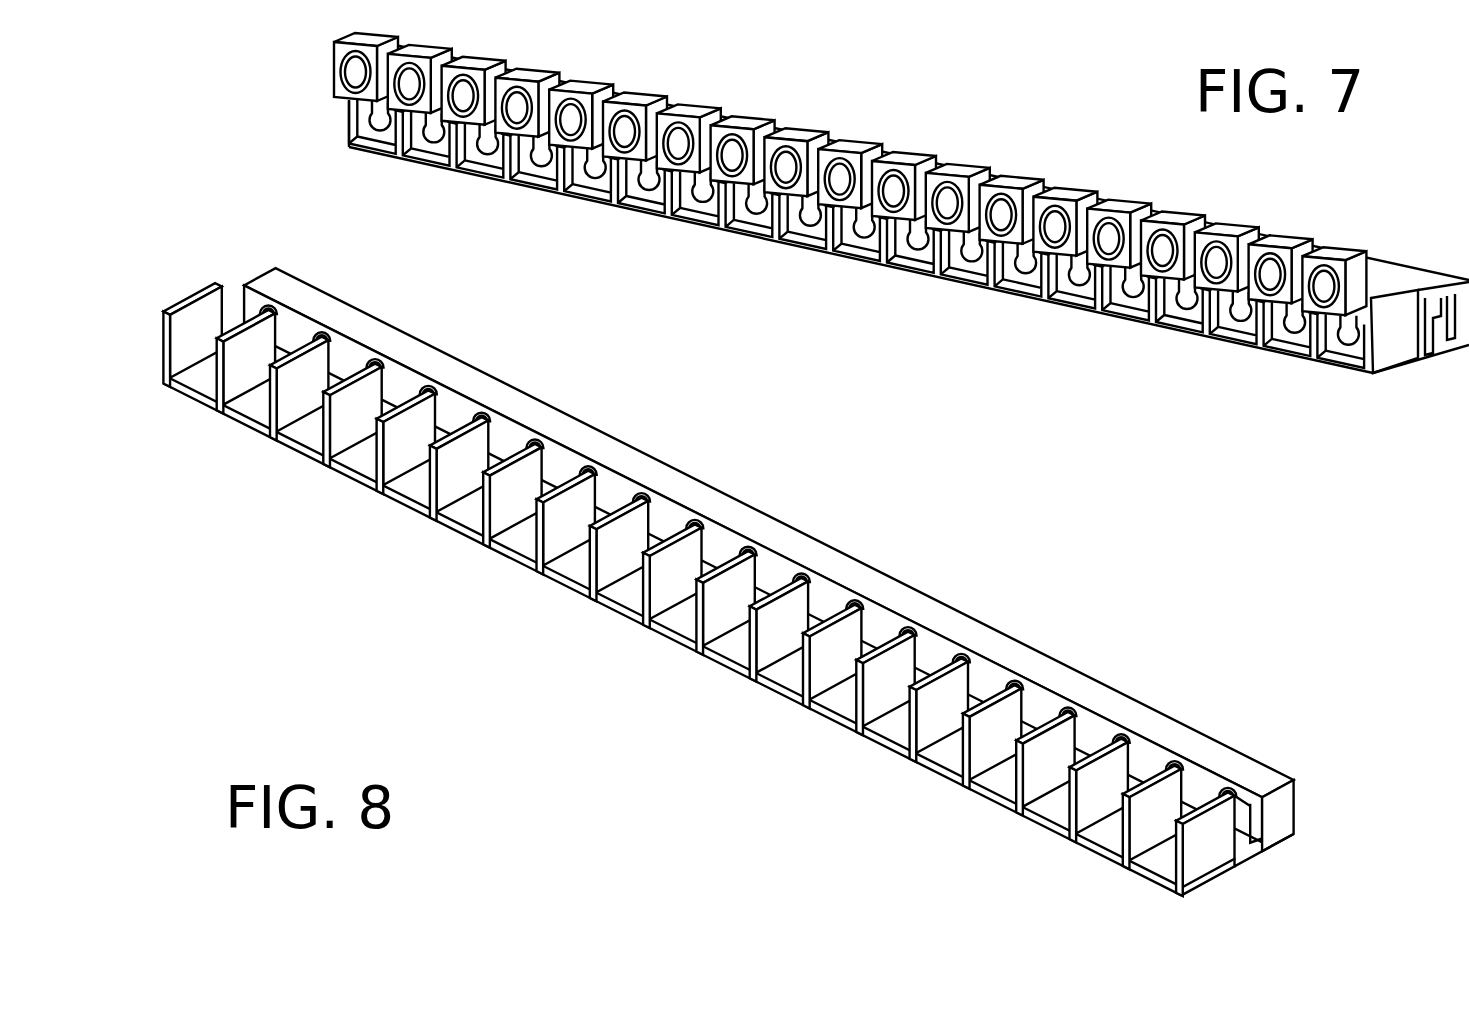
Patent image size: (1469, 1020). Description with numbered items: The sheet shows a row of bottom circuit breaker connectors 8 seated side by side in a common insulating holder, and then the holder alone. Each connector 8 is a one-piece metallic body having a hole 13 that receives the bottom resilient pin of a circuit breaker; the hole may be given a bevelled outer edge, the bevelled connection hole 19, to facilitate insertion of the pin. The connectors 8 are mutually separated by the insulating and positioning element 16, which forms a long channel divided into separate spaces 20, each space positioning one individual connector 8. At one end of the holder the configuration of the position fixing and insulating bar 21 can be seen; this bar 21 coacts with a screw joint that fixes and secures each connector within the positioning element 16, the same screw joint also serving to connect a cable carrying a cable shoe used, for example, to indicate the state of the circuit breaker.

In FIG. 7, the bottom circuit breaker connector 8 is at (760, 213).
In FIG. 7, the hole 13 is at (790, 146).
In FIG. 7, the insulating and positioning element 16 is at (1003, 274).
In FIG. 8, the insulating and positioning element 16 is at (645, 620).
In FIG. 7, the bevelled connection hole 19 is at (777, 152).
In FIG. 8, the separate space 20 is at (400, 457).
In FIG. 8, the position fixing and insulating bar 21 is at (1248, 823).